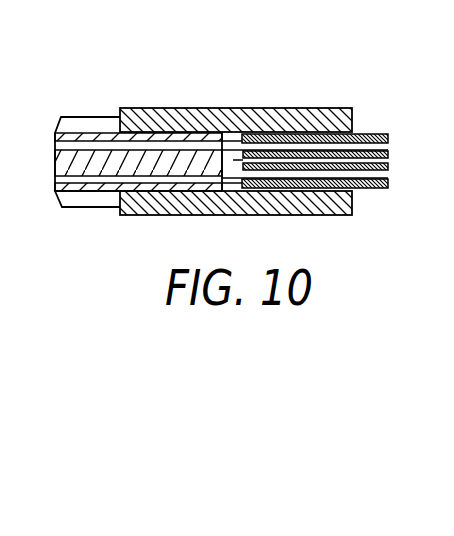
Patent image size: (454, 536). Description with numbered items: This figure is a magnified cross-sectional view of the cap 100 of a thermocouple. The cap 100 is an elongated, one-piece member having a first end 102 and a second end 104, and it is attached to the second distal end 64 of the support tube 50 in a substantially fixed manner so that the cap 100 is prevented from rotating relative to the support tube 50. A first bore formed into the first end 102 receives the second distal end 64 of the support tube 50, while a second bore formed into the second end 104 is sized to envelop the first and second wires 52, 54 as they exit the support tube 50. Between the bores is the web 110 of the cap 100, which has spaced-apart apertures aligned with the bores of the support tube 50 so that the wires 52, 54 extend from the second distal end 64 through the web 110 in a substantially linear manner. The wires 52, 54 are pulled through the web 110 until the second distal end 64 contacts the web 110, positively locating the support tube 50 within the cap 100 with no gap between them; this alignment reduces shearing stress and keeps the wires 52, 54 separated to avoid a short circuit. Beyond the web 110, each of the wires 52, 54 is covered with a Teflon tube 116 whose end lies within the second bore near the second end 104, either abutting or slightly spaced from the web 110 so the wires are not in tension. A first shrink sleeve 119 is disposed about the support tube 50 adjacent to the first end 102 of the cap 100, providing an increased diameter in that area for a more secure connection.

The cap 100 is at (308, 108).
The first end 102 is at (119, 209).
The second end 104 is at (352, 206).
The first shrink sleeve 119 is at (95, 126).
The first wire 52 is at (55, 141).
The second wire 54 is at (58, 177).
The support tube 50 is at (92, 185).
The Teflon tube 116 is at (365, 134).
The second distal end 64 is at (221, 134).
The web 110 is at (228, 186).